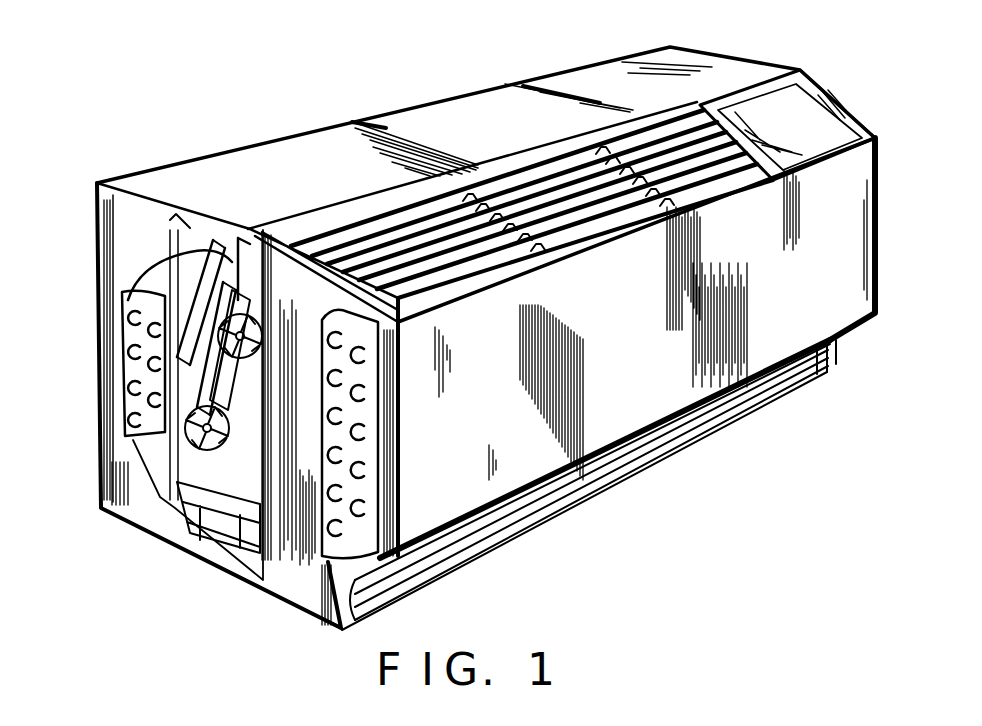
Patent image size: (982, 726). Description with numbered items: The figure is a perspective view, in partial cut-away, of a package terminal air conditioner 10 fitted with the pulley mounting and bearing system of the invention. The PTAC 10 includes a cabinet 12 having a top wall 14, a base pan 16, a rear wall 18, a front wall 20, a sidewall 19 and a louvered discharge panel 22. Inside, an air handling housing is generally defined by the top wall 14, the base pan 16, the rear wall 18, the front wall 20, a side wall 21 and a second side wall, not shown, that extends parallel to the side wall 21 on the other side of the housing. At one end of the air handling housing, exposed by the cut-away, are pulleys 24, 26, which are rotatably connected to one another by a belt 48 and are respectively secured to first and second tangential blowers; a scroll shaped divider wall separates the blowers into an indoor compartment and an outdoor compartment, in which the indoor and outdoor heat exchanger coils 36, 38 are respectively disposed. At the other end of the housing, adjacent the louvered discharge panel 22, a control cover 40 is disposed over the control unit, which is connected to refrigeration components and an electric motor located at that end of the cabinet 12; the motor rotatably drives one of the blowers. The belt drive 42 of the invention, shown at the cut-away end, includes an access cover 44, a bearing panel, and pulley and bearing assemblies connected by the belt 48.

The package terminal air conditioner 10 is at (268, 74).
The cabinet 12 is at (482, 90).
The top wall 14 is at (600, 108).
The base pan 16 is at (215, 534).
The rear wall 18 is at (168, 172).
The sidewall 19 is at (186, 228).
The front wall 20 is at (625, 432).
The side wall 21 is at (240, 262).
The louvered discharge panel 22 is at (440, 302).
The pulley 24 is at (252, 318).
The pulley 26 is at (216, 472).
The indoor heat exchanger coil 36 is at (382, 424).
The outdoor heat exchanger coil 38 is at (140, 350).
The control cover 40 is at (808, 118).
The belt drive 42 is at (182, 282).
The access cover 44 is at (192, 298).
The belt 48 is at (238, 420).